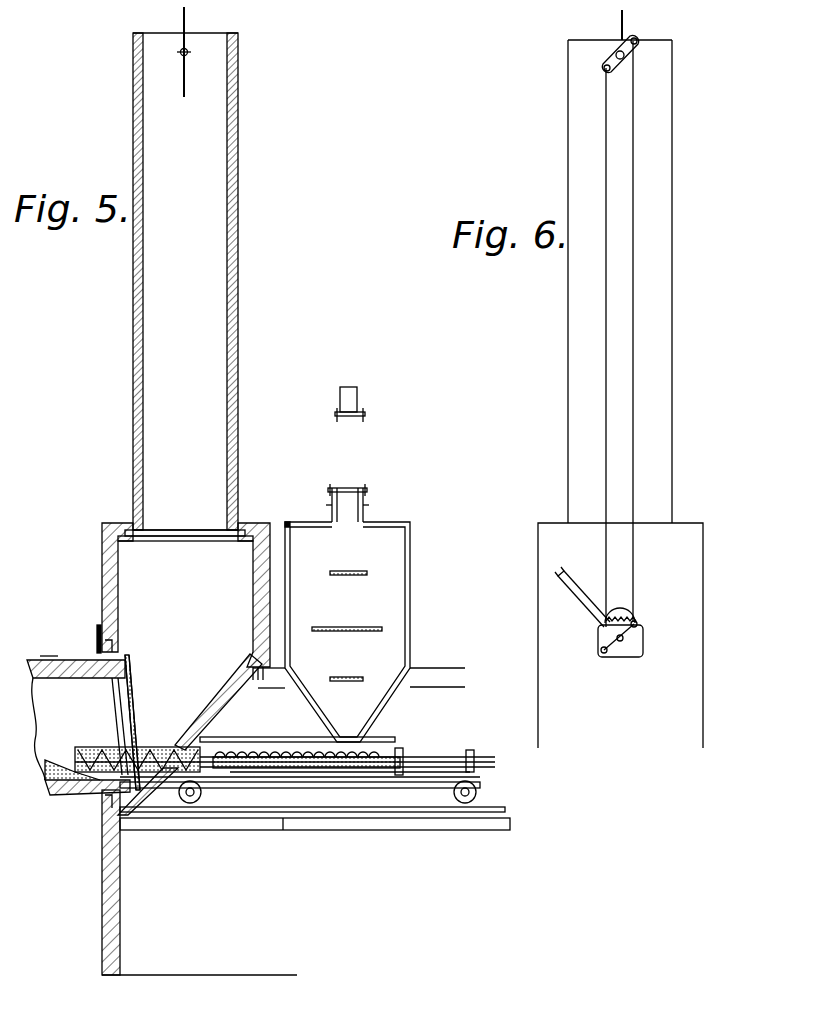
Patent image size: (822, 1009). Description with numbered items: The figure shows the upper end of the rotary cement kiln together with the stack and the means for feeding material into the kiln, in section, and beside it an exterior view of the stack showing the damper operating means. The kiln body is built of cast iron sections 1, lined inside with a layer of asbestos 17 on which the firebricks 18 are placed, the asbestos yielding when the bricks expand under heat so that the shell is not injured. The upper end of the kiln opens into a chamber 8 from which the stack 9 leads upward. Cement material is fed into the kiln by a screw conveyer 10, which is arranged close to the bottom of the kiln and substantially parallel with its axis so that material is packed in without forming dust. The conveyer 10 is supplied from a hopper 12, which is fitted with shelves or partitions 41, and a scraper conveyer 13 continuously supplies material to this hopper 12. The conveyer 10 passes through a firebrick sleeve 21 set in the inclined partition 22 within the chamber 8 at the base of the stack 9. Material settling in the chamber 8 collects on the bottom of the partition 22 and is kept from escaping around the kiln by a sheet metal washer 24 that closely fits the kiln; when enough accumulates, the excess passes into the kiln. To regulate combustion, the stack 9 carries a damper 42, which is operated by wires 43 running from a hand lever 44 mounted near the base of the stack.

In FIG. 5, the cast iron sections 1 is at (49, 650).
In FIG. 5, the chamber 8 is at (199, 749).
In FIG. 6, the chamber 8 is at (629, 635).
In FIG. 5, the stack 9 is at (238, 212).
In FIG. 6, the stack 9 is at (629, 281).
In FIG. 5, the screw conveyer 10 is at (213, 748).
In FIG. 5, the hopper 12 is at (412, 608).
In FIG. 5, the scraper conveyer 13 is at (362, 425).
In FIG. 5, the layer of asbestos 17 is at (55, 678).
In FIG. 5, the firebricks 18 is at (50, 786).
In FIG. 5, the firebrick sleeve 21 is at (176, 752).
In FIG. 5, the inclined partition 22 is at (232, 692).
In FIG. 5, the sheet metal washer 24 is at (97, 631).
In FIG. 5, the shelves or partitions 41 is at (360, 622).
In FIG. 5, the damper 42 is at (185, 32).
In FIG. 6, the damper 42 is at (623, 31).
In FIG. 6, the wires 43 is at (633, 356).
In FIG. 6, the hand lever 44 is at (580, 605).